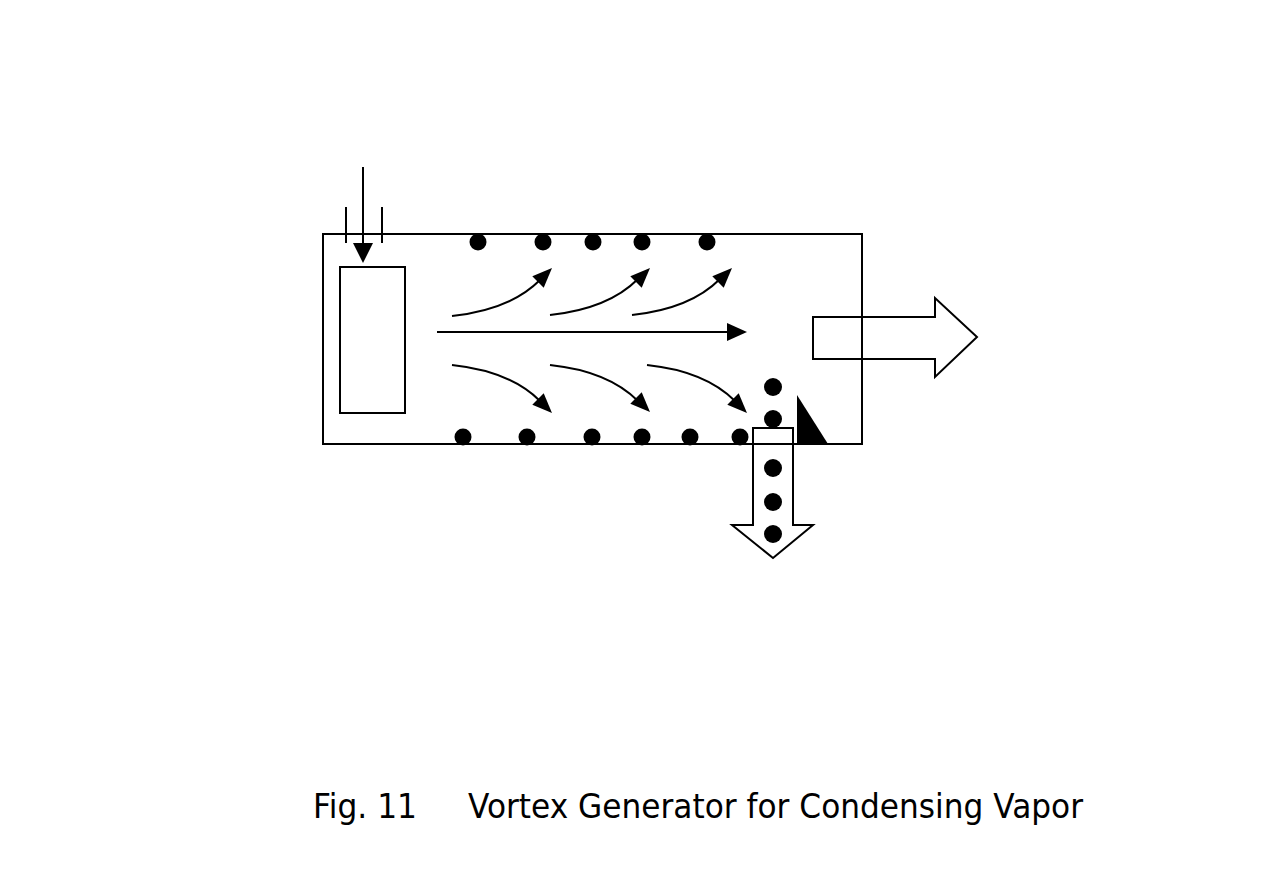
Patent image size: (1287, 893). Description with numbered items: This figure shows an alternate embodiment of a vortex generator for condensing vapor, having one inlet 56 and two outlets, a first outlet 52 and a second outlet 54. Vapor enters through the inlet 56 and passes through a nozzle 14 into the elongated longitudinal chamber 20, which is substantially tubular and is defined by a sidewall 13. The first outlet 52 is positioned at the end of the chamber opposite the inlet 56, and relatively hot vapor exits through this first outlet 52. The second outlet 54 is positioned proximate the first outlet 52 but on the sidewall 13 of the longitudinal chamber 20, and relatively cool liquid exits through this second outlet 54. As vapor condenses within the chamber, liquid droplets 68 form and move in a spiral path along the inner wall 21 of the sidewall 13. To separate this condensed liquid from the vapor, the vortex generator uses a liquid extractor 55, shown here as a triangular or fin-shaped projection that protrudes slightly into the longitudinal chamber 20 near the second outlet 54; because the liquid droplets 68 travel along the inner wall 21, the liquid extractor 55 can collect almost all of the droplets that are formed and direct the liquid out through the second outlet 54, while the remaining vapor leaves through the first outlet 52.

The sidewall 13 is at (663, 450).
The nozzle 14 is at (358, 397).
The longitudinal chamber 20 is at (614, 228).
The inner wall 21 is at (442, 250).
The first outlet 52 is at (910, 315).
The second outlet 54 is at (792, 493).
The liquid extractor 55 is at (825, 423).
The inlet 56 is at (347, 196).
The liquid droplets 68 is at (717, 233).